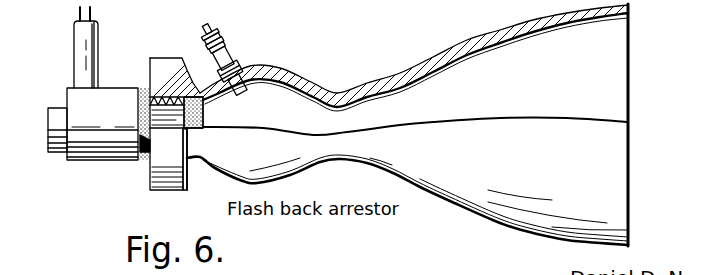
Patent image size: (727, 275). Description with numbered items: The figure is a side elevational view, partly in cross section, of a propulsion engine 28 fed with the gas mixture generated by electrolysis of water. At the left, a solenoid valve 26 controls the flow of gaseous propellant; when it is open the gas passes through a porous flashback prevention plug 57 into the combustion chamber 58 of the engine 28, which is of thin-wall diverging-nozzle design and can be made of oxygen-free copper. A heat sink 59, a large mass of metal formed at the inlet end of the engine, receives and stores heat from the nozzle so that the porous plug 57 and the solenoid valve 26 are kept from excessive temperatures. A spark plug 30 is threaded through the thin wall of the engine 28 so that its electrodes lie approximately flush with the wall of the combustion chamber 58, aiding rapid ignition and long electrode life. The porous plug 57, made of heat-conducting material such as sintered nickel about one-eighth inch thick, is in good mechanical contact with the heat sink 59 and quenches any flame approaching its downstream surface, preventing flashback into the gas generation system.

The solenoid valve 26 is at (93, 142).
The engine 28 is at (379, 77).
The spark plug 30 is at (229, 50).
The porous flashback prevention plug 57 is at (200, 161).
The combustion chamber 58 is at (336, 123).
The heat sink 59 is at (167, 175).